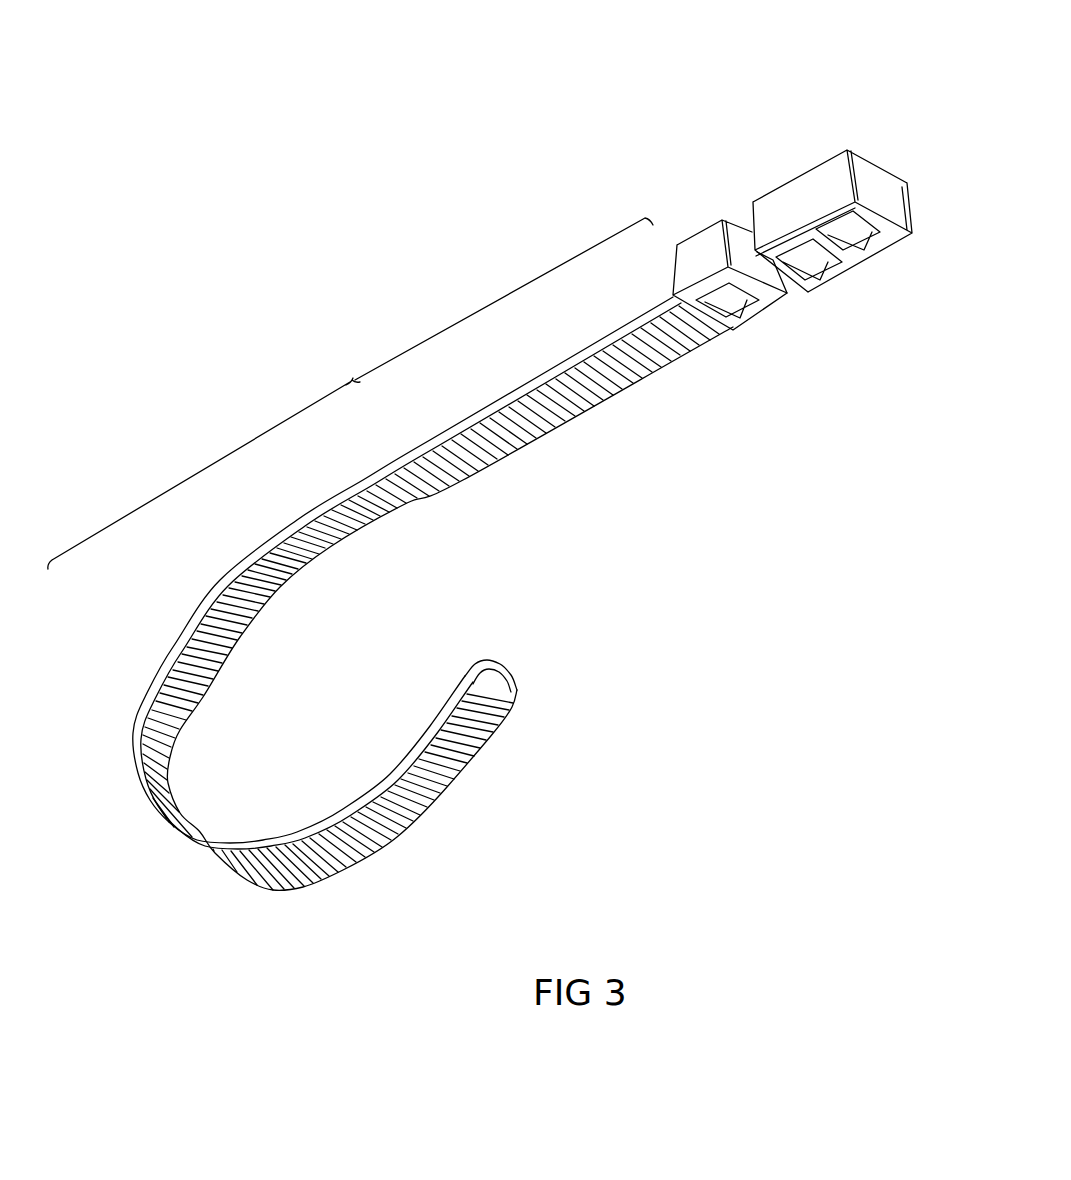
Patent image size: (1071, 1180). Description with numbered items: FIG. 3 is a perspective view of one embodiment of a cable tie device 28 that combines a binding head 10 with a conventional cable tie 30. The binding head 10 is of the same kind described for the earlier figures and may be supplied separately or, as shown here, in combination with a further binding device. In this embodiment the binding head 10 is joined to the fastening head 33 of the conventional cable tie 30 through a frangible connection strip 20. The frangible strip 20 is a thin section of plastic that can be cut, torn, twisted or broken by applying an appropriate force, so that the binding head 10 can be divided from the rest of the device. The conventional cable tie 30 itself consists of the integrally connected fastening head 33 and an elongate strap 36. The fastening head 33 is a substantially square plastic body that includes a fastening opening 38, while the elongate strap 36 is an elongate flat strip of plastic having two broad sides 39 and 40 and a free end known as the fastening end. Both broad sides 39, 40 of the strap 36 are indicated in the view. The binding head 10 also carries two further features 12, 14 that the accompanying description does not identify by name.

The binding head 10 is at (797, 118).
The locking pawl 12 is at (821, 270).
The head aperture 14 is at (880, 242).
The frangible connection strip 20 is at (800, 300).
The cable tie device 28 is at (243, 925).
The conventional cable tie 30 is at (350, 393).
The fastening head 33 is at (697, 195).
The elongate strap 36 is at (258, 582).
The fastening opening 38 is at (742, 322).
The broad side 39 is at (447, 488).
The broad side 40 is at (475, 757).